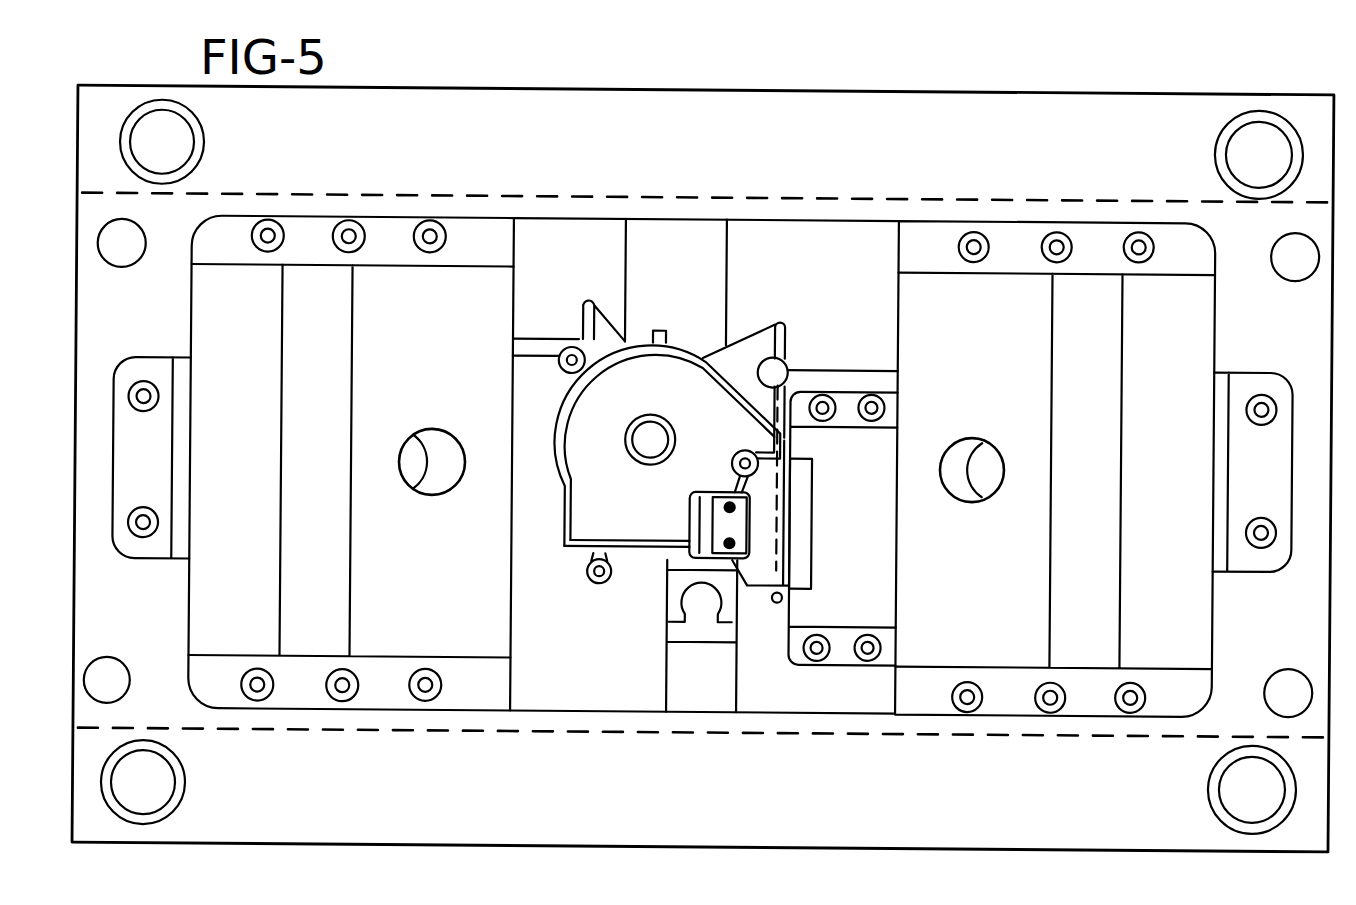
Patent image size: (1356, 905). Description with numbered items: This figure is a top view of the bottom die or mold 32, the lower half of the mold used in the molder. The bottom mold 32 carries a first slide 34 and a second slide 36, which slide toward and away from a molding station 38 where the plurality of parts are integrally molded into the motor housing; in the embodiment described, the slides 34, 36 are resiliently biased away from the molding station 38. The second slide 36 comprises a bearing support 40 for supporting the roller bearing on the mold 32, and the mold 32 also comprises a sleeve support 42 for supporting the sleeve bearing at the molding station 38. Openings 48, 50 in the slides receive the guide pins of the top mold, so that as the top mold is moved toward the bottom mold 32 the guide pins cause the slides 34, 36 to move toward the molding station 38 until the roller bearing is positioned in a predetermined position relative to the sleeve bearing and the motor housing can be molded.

The bottom die or mold 32 is at (802, 86).
The first slide 34 is at (351, 427).
The second slide 36 is at (1055, 431).
The molding station 38 is at (704, 429).
The bearing support 40 is at (733, 520).
The sleeve support 42 is at (643, 428).
The opening 48 is at (970, 438).
The opening 50 is at (433, 439).